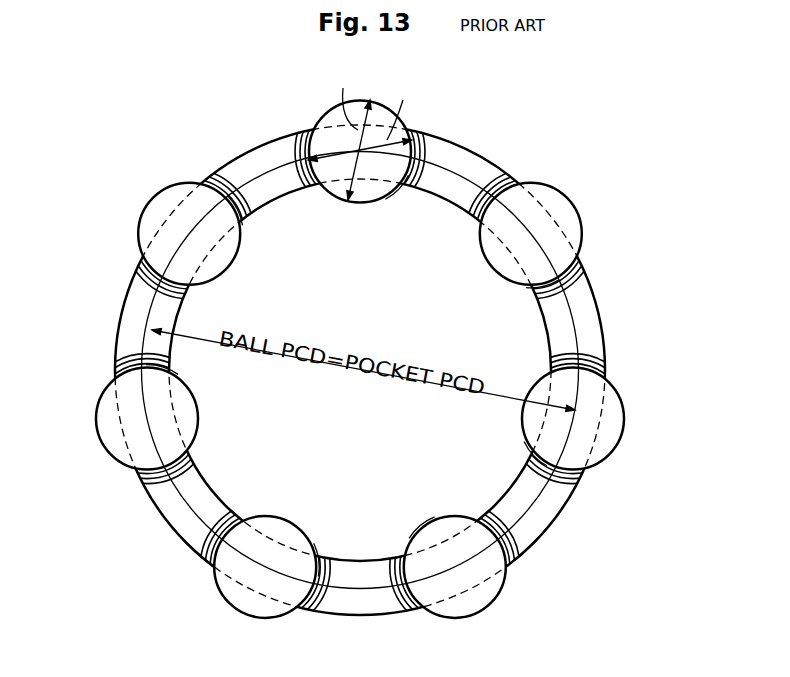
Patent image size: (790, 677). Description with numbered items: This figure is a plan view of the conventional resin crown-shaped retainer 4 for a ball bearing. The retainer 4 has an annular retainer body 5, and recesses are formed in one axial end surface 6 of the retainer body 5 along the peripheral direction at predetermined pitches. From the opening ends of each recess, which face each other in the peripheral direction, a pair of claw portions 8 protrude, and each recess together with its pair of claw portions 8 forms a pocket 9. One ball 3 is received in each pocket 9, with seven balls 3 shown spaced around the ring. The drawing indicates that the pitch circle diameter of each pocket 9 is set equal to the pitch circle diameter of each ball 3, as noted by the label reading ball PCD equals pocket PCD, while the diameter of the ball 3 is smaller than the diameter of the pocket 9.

The ball 3 is at (322, 112).
The resin crown-shaped retainer 4 is at (467, 138).
The retainer body 5 is at (485, 157).
The axial end surface 6 is at (586, 307).
The claw portion 8 is at (230, 176).
The pocket 9 is at (232, 214).